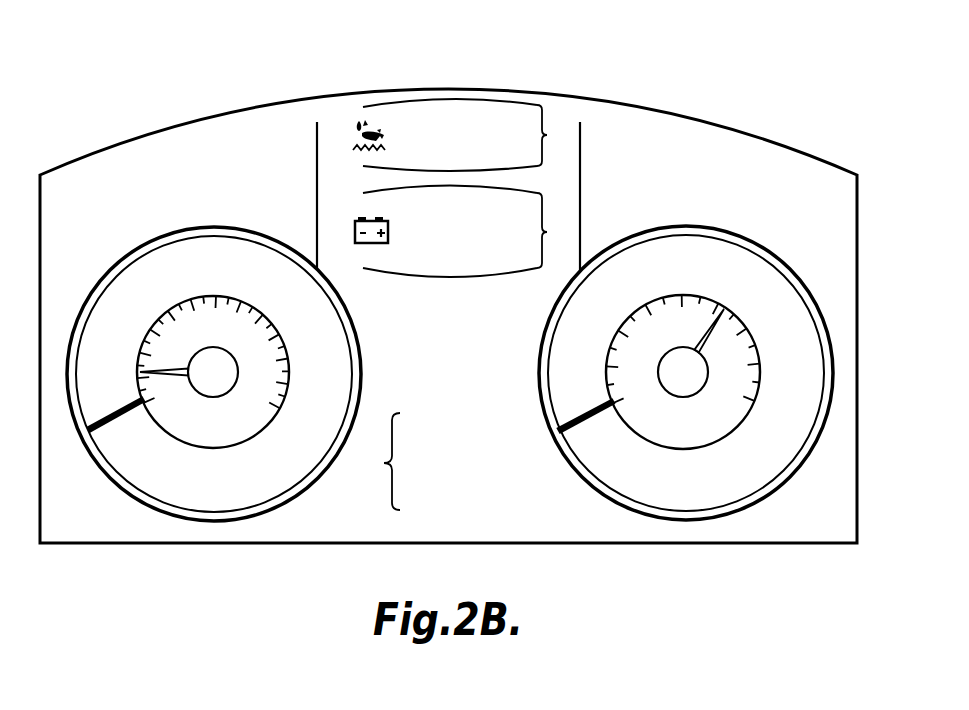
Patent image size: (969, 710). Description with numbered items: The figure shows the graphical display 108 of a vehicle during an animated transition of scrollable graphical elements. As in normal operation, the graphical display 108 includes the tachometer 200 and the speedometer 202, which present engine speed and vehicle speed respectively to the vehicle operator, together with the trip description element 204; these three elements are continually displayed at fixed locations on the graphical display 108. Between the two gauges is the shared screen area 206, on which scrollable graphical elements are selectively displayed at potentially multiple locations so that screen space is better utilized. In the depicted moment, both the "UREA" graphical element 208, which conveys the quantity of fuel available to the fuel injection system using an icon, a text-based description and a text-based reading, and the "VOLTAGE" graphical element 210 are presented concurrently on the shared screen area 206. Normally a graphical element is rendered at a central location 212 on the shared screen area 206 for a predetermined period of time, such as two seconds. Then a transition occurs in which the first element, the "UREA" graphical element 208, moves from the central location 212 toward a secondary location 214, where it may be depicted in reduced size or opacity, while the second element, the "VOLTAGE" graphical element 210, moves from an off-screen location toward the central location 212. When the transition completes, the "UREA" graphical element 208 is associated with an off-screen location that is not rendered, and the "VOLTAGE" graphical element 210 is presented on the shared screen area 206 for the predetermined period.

The graphical display 108 is at (116, 90).
The tachometer 200 is at (82, 342).
The speedometer 202 is at (817, 342).
The trip description element 204 is at (382, 463).
The shared screen area 206 is at (557, 102).
The "UREA" graphical element 208 is at (382, 102).
The "VOLTAGE" graphical element 210 is at (348, 206).
The central location 212 is at (547, 232).
The secondary location 214 is at (547, 135).